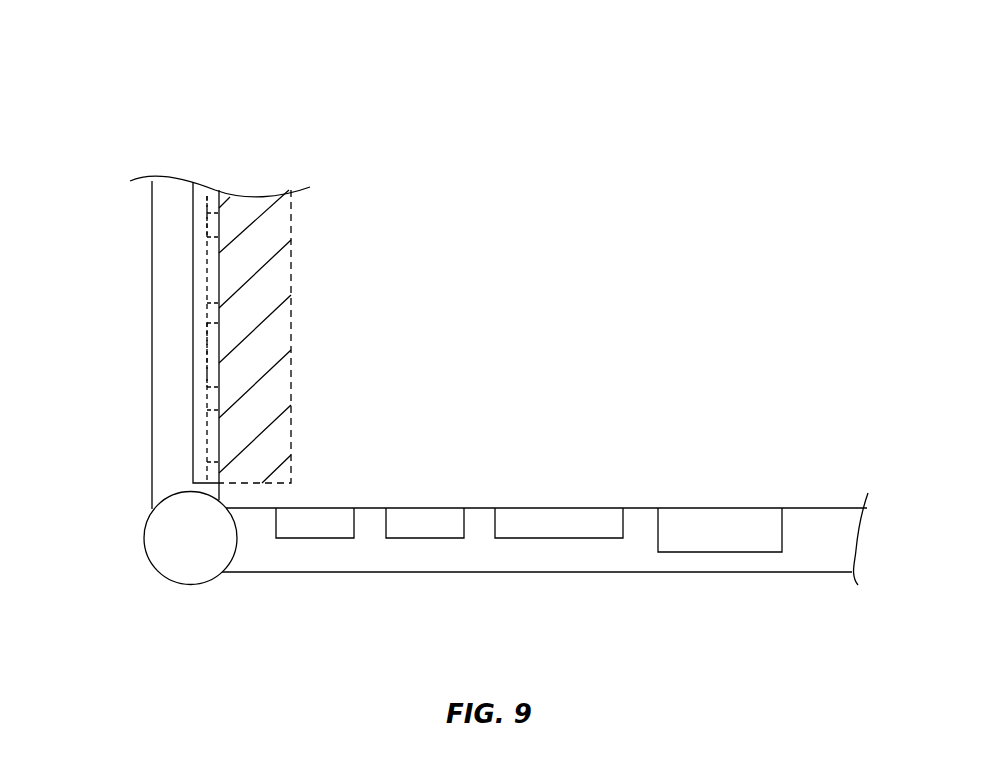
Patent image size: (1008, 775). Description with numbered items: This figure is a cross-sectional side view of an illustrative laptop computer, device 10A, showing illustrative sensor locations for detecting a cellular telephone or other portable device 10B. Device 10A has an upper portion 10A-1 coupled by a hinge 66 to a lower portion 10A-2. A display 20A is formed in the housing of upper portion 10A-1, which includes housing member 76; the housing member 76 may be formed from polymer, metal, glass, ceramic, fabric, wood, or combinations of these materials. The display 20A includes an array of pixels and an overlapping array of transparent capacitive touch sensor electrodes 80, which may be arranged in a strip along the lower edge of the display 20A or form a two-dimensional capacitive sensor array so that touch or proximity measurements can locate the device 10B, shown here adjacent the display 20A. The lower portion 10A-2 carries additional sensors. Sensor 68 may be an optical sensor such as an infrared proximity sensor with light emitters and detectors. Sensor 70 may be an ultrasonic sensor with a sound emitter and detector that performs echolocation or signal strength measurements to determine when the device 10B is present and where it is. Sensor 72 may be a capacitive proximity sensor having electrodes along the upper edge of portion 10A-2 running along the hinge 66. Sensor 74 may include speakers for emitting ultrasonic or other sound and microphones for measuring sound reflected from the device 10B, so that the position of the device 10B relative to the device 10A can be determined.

The device 10A is at (492, 88).
The upper portion 10A-1 is at (161, 402).
The lower portion 10A-2 is at (490, 562).
The device 10B is at (272, 197).
The display 20A is at (203, 187).
The housing member 76 is at (167, 187).
The transparent capacitive touch sensor electrodes 80 is at (215, 262).
The hinge 66 is at (187, 567).
The sensor 68 is at (320, 511).
The sensor 70 is at (428, 511).
The sensor 72 is at (556, 511).
The sensor 74 is at (723, 511).